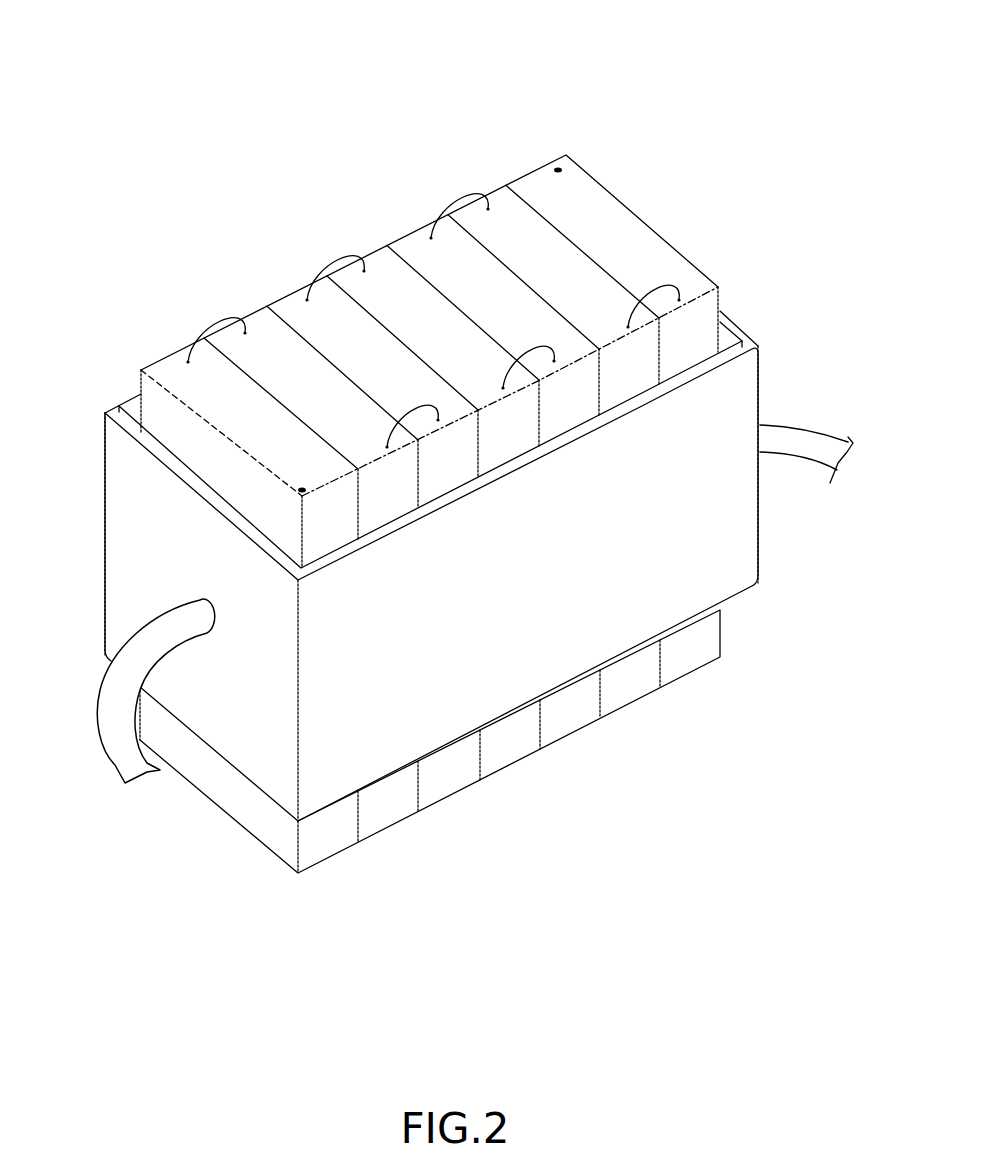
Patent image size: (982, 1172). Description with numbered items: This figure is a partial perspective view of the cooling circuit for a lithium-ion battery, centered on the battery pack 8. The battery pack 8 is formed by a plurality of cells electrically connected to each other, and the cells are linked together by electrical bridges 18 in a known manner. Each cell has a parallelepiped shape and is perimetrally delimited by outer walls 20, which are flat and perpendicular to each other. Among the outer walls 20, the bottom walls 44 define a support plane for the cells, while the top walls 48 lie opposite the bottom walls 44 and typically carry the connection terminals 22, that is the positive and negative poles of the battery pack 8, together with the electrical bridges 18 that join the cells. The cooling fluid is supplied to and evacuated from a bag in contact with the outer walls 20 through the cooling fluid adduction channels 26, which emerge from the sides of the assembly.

The battery pack 8 is at (350, 142).
The electrical bridges 18 is at (216, 320).
The outer walls 20 is at (708, 274).
The connection terminals 22 is at (558, 167).
The cooling fluid adduction channels 26 is at (797, 443).
The bottom walls 44 is at (665, 690).
The top walls 48 is at (613, 237).